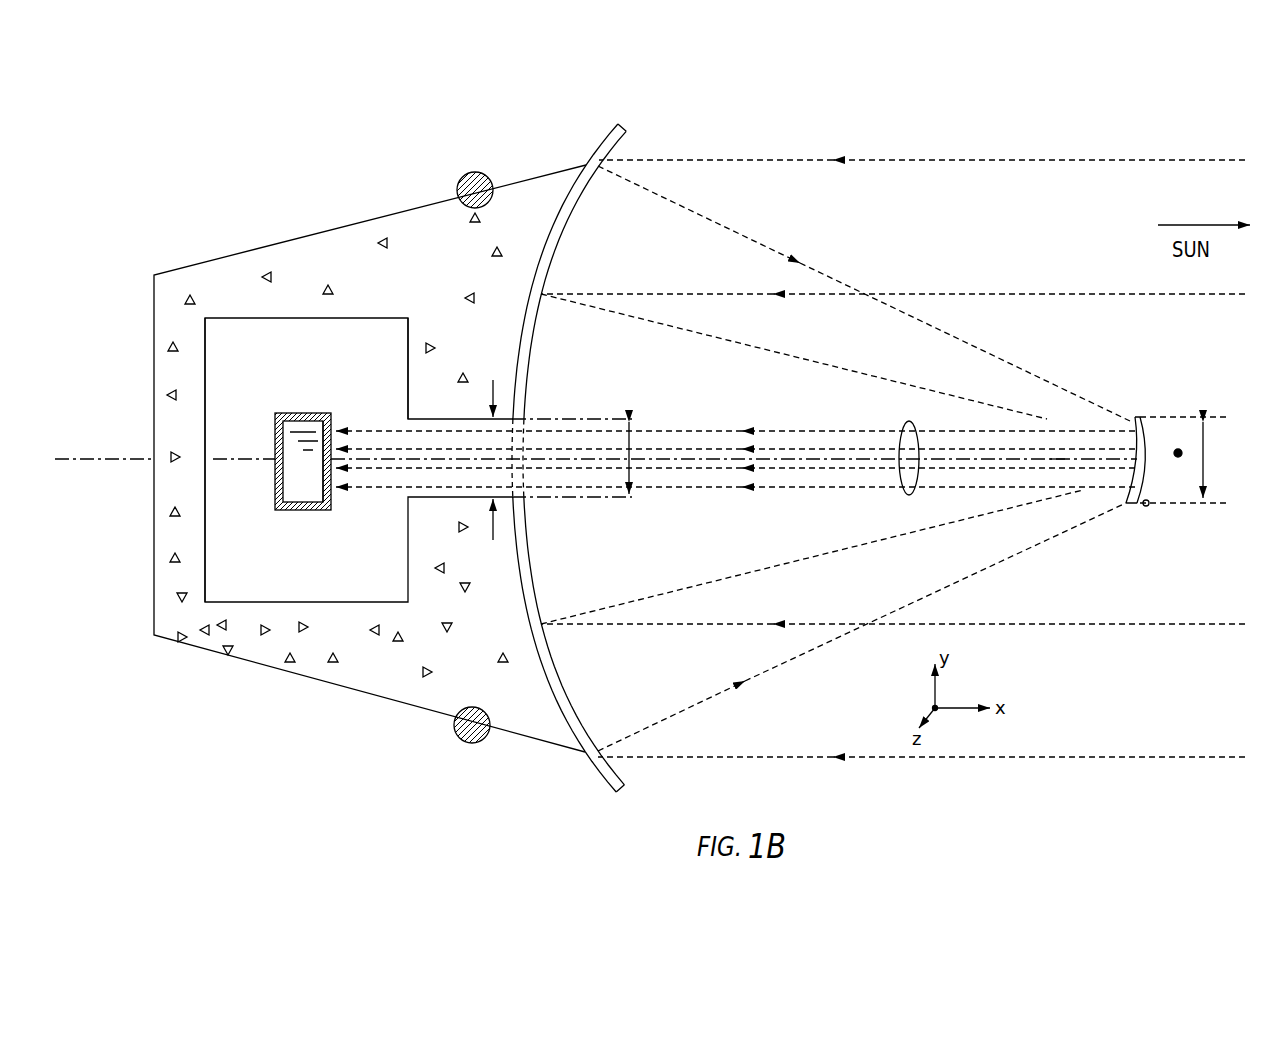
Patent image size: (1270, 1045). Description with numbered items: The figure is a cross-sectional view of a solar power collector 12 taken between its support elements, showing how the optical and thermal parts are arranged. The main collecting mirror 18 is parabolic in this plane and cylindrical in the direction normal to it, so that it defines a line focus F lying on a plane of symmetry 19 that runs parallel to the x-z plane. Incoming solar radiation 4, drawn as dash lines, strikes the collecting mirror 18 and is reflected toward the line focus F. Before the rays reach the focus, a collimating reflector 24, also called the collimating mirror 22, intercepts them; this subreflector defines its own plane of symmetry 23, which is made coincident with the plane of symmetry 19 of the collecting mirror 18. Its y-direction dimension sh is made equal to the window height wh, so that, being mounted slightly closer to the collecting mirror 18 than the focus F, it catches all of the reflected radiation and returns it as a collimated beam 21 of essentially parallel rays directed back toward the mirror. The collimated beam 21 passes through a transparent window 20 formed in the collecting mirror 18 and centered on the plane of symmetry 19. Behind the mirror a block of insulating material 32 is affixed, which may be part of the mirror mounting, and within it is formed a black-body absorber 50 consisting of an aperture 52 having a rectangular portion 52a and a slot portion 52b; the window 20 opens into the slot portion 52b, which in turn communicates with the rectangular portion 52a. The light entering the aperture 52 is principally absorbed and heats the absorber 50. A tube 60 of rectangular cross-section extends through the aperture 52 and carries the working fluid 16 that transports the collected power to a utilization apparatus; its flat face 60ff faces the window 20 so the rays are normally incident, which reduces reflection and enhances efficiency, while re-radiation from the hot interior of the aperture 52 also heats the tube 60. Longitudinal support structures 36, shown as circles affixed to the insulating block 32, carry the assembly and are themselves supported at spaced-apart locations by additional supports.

The solar power collector 12 is at (370, 459).
The block of insulating material 32 is at (441, 212).
The longitudinal support structures 36 is at (494, 180).
The collecting mirror 18 is at (623, 118).
The transparent window 20 is at (517, 482).
The black-body absorber 50 is at (359, 460).
The aperture 52 is at (290, 460).
The rectangular portion 52a is at (386, 368).
The slot portion 52b is at (536, 458).
The tube 60 is at (292, 412).
The flat face 60ff is at (333, 418).
The working fluid 16 is at (298, 492).
The plane of symmetry 19 is at (104, 461).
The solar radiation 4 is at (793, 163).
The collimated beam 21 is at (906, 497).
The collimating mirror 22 is at (1146, 437).
The plane of symmetry of the subreflector 23 is at (1056, 458).
The collimating reflector 24 is at (1128, 512).
The line focus F is at (1178, 460).
The y-direction dimension of the subreflector sh is at (1185, 460).
The window height wh is at (655, 420).